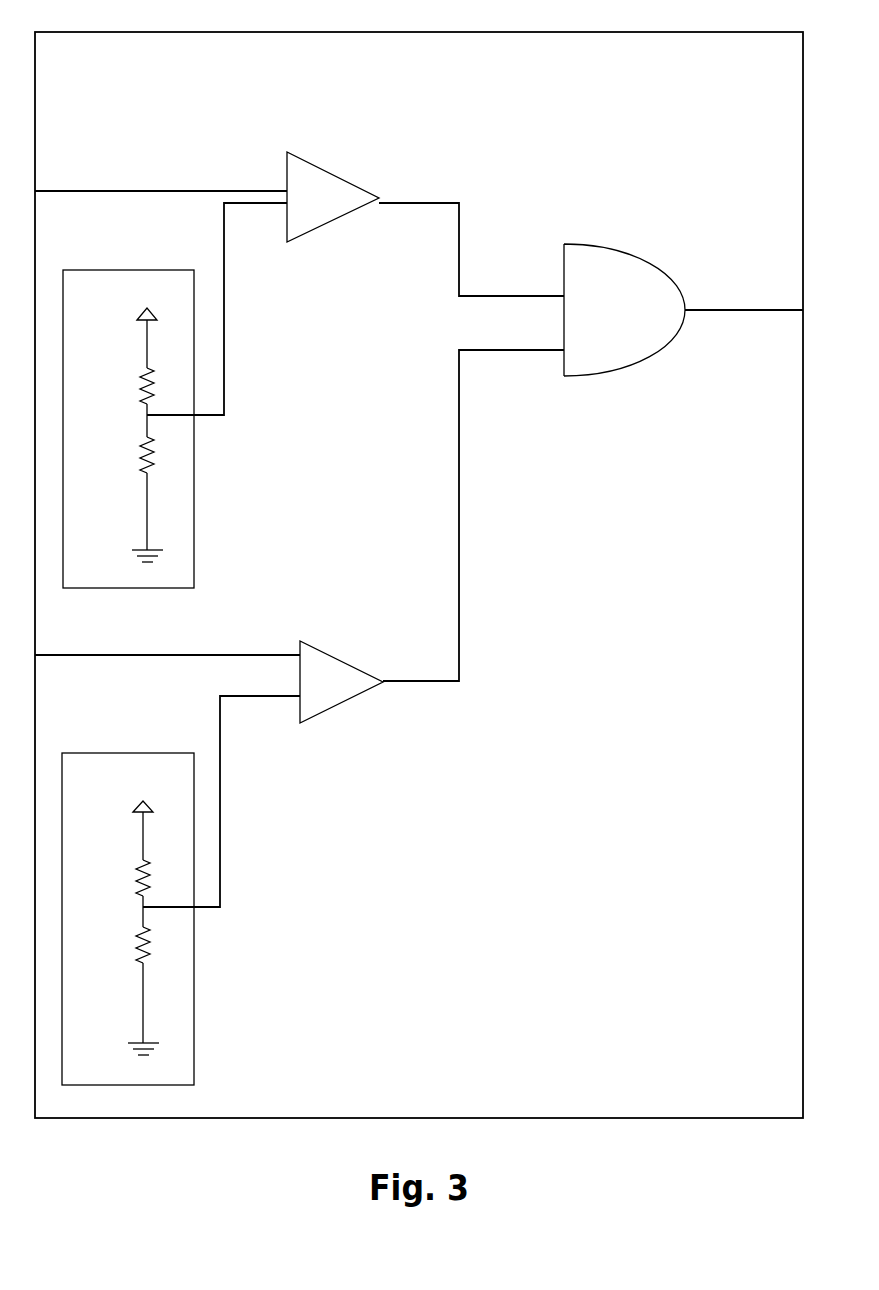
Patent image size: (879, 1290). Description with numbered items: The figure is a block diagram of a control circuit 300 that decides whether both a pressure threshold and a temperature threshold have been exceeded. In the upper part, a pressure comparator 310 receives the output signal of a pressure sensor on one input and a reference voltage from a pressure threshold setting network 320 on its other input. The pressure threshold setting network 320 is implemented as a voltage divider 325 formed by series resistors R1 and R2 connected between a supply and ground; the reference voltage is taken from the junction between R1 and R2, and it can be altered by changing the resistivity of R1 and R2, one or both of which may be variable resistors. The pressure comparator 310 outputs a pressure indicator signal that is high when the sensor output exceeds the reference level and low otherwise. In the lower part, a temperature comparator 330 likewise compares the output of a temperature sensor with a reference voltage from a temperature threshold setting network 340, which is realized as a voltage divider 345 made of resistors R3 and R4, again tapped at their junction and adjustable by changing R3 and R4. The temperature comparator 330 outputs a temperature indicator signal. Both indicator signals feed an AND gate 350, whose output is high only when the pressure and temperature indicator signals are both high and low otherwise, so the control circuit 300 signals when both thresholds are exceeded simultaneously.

The control circuit 300 is at (400, 55).
The pressure comparator 310 is at (352, 217).
The pressure threshold setting network 320 is at (163, 429).
The voltage divider 325 is at (147, 349).
The temperature comparator 330 is at (366, 695).
The temperature threshold setting network 340 is at (159, 919).
The voltage divider 345 is at (143, 842).
The AND gate 350 is at (643, 362).
The resistor R1 is at (128, 386).
The resistor R2 is at (128, 455).
The resistor R3 is at (126, 878).
The resistor R4 is at (126, 945).